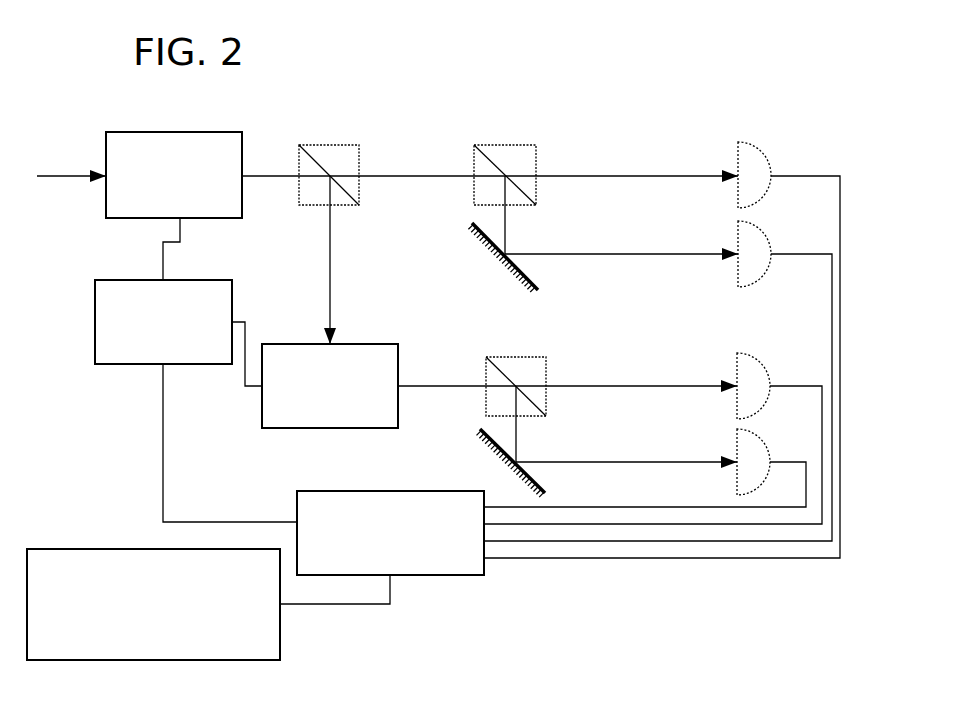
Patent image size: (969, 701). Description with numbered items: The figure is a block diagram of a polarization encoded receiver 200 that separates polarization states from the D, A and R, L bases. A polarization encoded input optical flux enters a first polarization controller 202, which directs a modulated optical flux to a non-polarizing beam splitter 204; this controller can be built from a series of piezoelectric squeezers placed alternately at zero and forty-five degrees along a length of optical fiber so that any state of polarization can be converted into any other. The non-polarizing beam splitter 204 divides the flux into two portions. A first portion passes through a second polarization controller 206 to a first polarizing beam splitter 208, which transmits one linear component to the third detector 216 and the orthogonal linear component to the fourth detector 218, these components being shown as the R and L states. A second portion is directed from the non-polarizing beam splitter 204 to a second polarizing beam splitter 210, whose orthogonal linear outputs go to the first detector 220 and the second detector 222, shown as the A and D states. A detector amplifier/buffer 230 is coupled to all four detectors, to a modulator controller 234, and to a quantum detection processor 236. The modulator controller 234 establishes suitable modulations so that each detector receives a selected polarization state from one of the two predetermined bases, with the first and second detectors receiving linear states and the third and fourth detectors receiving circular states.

The polarization encoded receiver 200 is at (61, 484).
The first polarization controller 202 is at (174, 175).
The non-polarizing beam splitter 204 is at (330, 145).
The second polarization controller 206 is at (330, 386).
The first polarizing beam splitter 208 is at (487, 357).
The second polarizing beam splitter 210 is at (515, 145).
The detector 216 is at (737, 368).
The detector 218 is at (737, 440).
The detector 220 is at (760, 150).
The detector D2 222 is at (740, 230).
The detector amplifier/buffer 230 is at (390, 533).
The modulator controller 234 is at (163, 322).
The quantum detection processor 236 is at (153, 604).